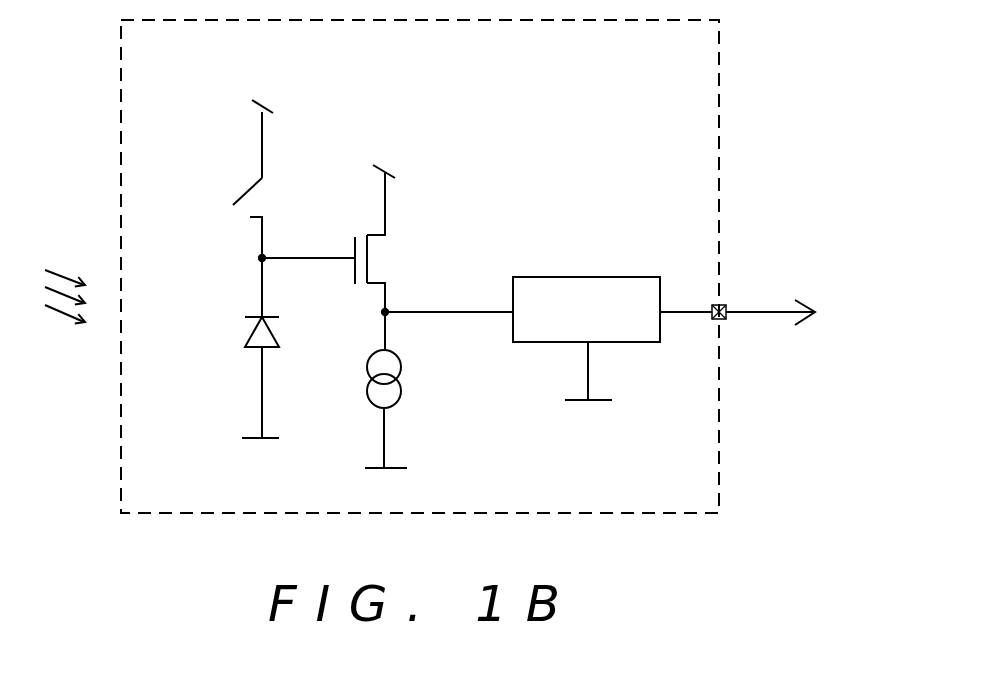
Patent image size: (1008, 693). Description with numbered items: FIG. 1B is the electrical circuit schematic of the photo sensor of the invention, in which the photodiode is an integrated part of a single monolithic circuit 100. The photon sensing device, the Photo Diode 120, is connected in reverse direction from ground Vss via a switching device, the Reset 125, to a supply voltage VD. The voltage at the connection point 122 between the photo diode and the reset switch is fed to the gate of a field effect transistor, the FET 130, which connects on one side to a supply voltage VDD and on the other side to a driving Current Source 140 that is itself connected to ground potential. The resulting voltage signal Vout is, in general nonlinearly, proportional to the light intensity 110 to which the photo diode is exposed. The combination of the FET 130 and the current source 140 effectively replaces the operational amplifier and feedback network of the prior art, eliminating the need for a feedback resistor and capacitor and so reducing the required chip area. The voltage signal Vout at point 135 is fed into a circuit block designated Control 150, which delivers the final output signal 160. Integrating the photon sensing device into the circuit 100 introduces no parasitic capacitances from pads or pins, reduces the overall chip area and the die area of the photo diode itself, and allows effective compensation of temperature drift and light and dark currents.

The circuit 100 is at (720, 58).
The light intensity 110 is at (60, 312).
The Photo Diode 120 is at (273, 328).
The connection point 122 is at (252, 259).
The Reset 125 is at (253, 191).
The field effect transistor FET 130 is at (378, 253).
The point 135 is at (381, 311).
The Current Source 140 is at (363, 392).
The Control 150 is at (605, 277).
The output signal 160 is at (812, 300).